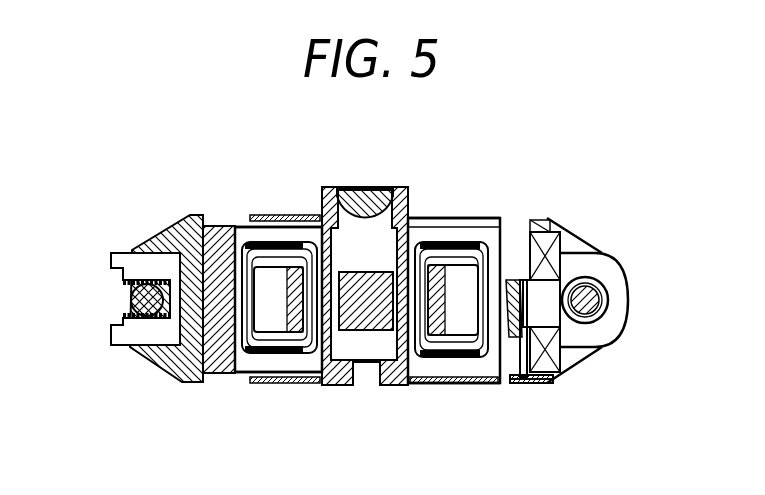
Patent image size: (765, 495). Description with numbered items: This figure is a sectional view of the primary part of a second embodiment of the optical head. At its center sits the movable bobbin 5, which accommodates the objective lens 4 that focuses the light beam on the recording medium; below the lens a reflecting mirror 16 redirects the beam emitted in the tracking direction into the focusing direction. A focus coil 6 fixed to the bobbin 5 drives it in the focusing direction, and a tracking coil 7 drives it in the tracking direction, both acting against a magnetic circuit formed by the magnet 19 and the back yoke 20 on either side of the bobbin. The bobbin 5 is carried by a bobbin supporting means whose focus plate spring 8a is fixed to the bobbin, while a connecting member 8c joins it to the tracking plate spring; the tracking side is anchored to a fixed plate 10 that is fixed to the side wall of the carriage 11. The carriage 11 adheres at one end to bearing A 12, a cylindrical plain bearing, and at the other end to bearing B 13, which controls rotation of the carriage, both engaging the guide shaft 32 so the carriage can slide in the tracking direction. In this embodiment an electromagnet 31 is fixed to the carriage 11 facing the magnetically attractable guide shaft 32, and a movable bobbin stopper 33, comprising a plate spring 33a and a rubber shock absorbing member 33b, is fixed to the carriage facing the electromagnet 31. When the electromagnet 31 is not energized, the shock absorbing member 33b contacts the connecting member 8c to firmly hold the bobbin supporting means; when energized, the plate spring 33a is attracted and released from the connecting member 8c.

The objective lens 4 is at (365, 187).
The movable bobbin 5 is at (410, 190).
The focus coil 6 is at (300, 227).
The tracking coil 7 is at (268, 222).
The focus plate spring 8a is at (478, 218).
The connecting member 8c is at (513, 228).
The fixed plate 10 is at (222, 228).
The carriage 11 is at (180, 368).
The bearing A 12 is at (613, 330).
The bearing B 13 is at (127, 337).
The reflecting mirror 16 is at (358, 318).
The magnet 19 is at (293, 328).
The back yoke 20 is at (263, 325).
The electromagnet 31 is at (565, 233).
The guide shaft 32 is at (140, 302).
The movable bobbin stopper 33 is at (640, 389).
The plate spring 33a is at (550, 383).
The shock absorbing member 33b is at (513, 384).